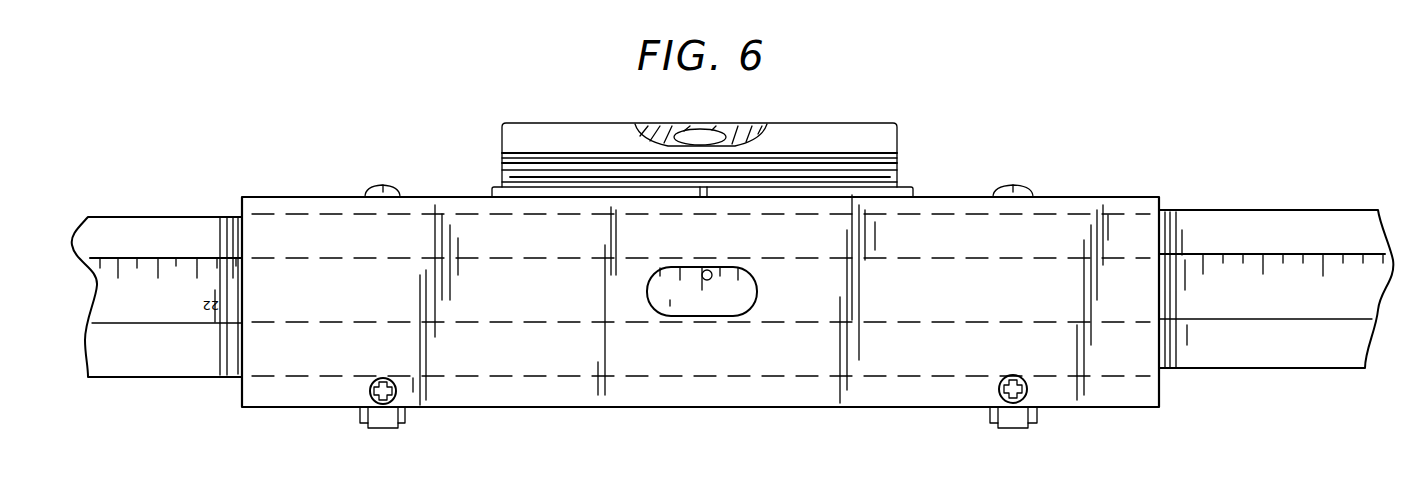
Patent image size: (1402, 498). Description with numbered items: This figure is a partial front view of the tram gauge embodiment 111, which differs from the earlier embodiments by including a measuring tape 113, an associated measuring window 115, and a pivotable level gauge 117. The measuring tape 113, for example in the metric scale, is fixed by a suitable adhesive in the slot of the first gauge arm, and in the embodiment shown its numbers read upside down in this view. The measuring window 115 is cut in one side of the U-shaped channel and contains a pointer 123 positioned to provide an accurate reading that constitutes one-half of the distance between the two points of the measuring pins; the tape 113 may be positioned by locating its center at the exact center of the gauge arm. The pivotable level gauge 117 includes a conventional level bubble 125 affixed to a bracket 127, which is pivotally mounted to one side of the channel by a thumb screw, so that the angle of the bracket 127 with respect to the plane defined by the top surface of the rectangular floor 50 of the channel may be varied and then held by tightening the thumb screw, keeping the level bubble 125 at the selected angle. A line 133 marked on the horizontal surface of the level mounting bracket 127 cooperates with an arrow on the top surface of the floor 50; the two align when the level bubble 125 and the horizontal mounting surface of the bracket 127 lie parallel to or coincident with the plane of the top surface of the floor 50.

The rectangular floor 50 is at (460, 197).
The tram gauge embodiment 111 is at (775, 128).
The measuring tape 113 is at (1265, 280).
The measuring window 115 is at (725, 300).
The pivotable level gauge 117 is at (878, 121).
The pointer 123 is at (709, 271).
The level bubble 125 is at (887, 145).
The bracket 127 is at (912, 186).
The line 133 is at (713, 193).